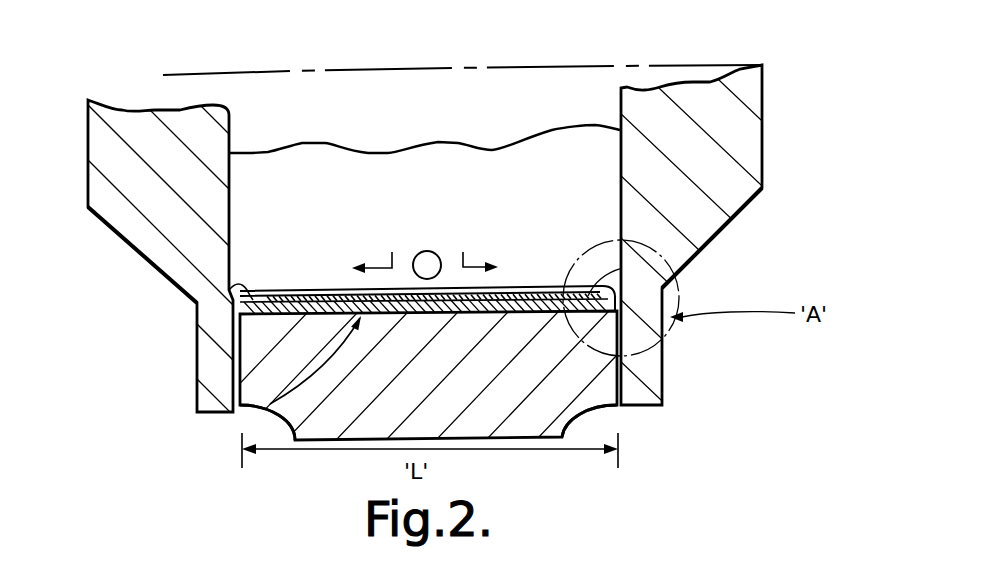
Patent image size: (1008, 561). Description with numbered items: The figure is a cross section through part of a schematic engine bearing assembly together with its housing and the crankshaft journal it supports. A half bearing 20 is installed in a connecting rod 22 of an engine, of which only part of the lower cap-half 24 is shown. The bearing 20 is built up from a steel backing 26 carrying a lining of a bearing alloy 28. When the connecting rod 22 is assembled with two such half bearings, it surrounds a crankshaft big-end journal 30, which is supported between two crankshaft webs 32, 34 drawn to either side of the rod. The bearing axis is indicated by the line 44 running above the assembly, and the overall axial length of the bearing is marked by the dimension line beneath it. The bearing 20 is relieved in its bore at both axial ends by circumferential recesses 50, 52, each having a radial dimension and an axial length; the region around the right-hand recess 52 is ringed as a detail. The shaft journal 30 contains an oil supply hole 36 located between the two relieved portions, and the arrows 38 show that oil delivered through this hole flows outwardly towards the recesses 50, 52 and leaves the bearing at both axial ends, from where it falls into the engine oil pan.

The bearing 20 is at (262, 410).
The connecting rod 22 is at (603, 413).
The lower cap-half 24 is at (303, 432).
The steel backing 26 is at (248, 303).
The bearing alloy 28 is at (291, 294).
The crankshaft big-end journal 30 is at (431, 233).
The crankshaft web 32 is at (100, 178).
The crankshaft web 34 is at (737, 197).
The oil supply hole 36 is at (431, 252).
The arrows 38 is at (463, 252).
The bearing axis 44 is at (693, 64).
The circumferential recess 50 is at (229, 278).
The circumferential recess 52 is at (622, 268).